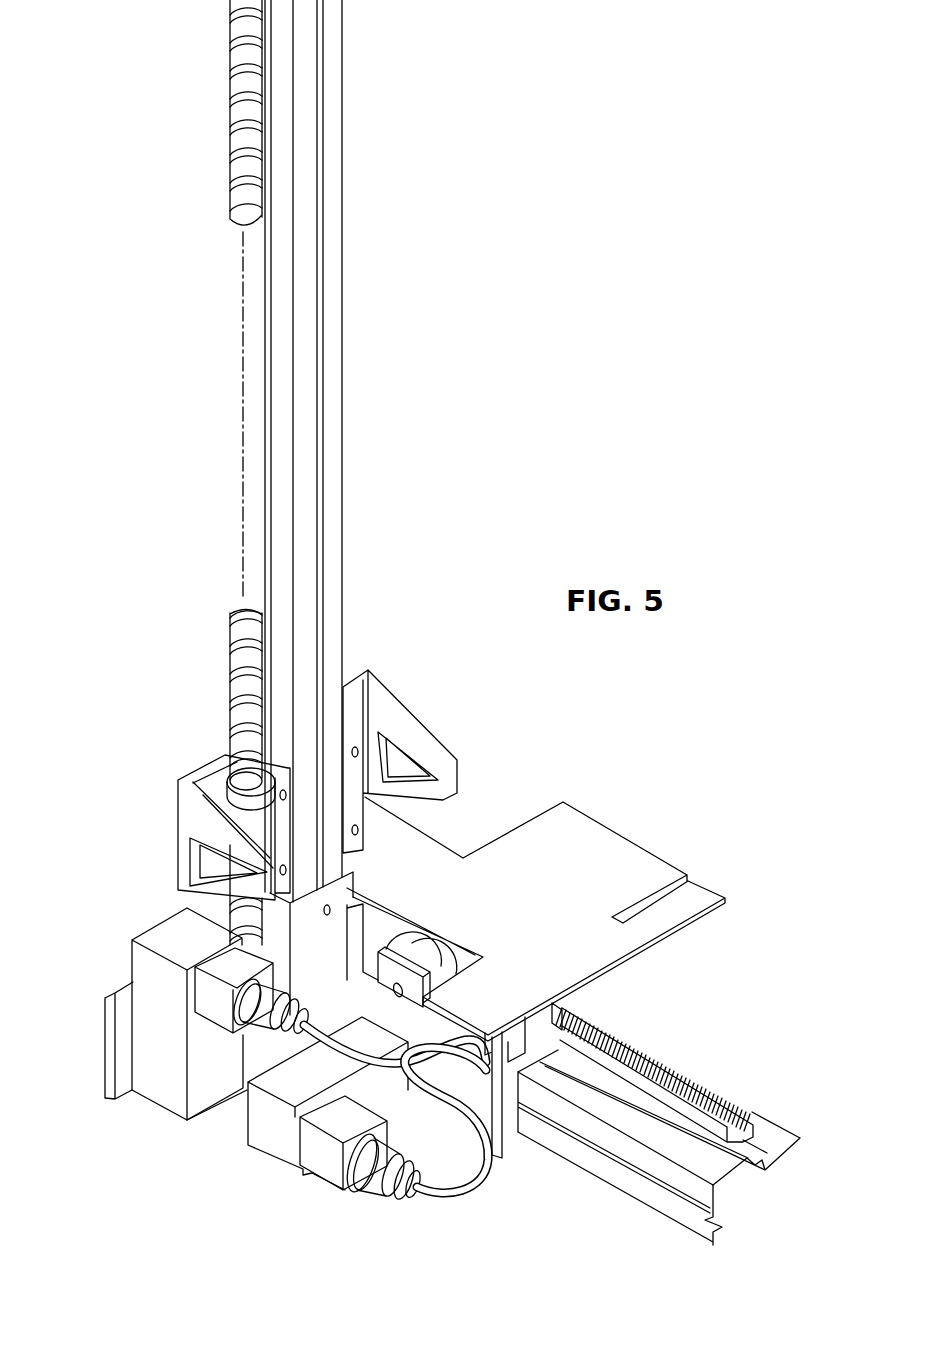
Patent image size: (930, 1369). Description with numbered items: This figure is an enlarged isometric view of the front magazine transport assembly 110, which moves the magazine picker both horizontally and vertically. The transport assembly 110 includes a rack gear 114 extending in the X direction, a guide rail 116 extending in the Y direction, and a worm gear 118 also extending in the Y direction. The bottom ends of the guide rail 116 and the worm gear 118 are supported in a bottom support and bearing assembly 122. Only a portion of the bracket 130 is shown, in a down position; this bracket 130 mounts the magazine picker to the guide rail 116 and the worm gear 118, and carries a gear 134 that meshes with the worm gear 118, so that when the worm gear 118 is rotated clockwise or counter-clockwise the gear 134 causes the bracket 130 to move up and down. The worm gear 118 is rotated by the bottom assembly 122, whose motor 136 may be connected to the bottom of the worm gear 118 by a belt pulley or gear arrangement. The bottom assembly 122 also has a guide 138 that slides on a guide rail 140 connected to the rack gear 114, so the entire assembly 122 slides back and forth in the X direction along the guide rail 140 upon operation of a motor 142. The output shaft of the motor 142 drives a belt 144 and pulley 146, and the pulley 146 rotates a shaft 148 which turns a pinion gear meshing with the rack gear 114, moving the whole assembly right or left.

The front magazine transport assembly 110 is at (437, 308).
The rack gear 114 is at (683, 1072).
The guide rail 116 is at (342, 487).
The worm gear 118 is at (230, 656).
The bottom support and bearing assembly 122 is at (376, 1017).
The bracket 130 is at (190, 814).
The gear 134 is at (252, 821).
The motor 136 is at (138, 957).
The guide 138 is at (517, 1143).
The guide rail 140 is at (637, 1197).
The motor 142 is at (278, 1158).
The belt 144 is at (431, 946).
The pulley 146 is at (411, 944).
The shaft 148 is at (394, 994).